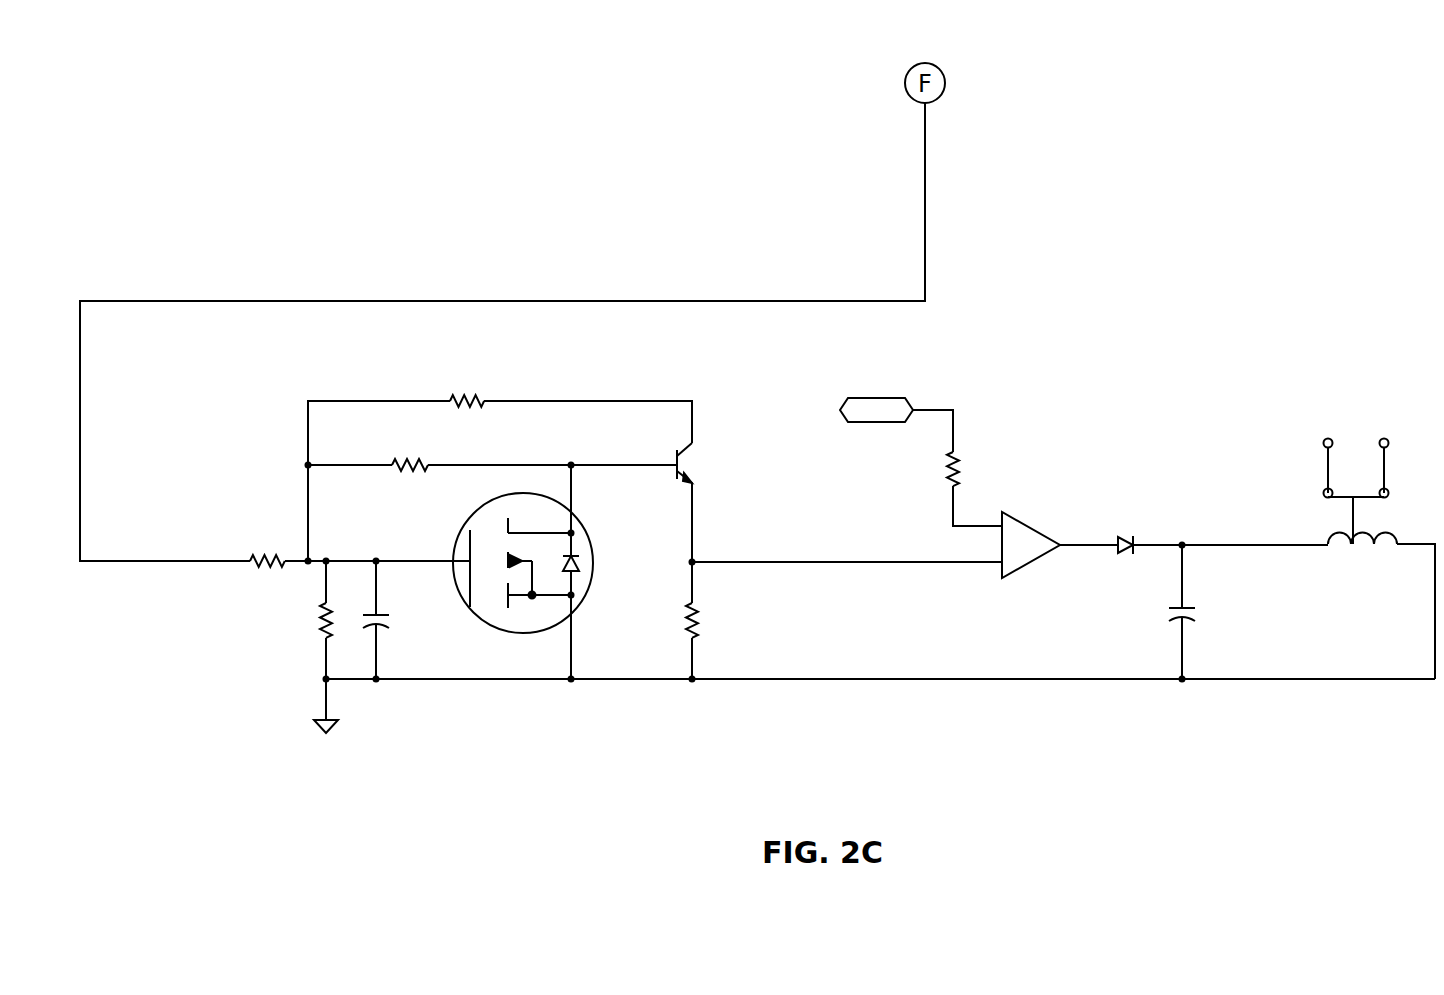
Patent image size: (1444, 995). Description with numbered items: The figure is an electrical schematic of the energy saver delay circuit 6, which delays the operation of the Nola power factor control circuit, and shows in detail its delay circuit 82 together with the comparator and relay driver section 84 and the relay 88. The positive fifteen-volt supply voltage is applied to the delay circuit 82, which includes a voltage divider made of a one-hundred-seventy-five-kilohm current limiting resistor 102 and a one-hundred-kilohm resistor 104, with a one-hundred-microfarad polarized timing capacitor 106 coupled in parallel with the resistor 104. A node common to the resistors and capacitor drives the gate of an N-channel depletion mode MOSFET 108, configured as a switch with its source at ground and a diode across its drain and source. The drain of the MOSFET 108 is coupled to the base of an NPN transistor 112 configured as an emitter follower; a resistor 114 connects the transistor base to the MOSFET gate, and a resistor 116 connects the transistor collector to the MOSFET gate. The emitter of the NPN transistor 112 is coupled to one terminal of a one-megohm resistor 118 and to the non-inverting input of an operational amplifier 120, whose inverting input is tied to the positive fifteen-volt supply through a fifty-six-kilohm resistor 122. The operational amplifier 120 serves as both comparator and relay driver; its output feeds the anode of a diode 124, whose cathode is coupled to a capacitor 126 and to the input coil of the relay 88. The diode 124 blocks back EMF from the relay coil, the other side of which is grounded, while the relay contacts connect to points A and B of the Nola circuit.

The energy saver delay circuit 6 is at (993, 690).
The delay circuit 82 is at (586, 713).
The comparator 84 is at (940, 645).
The relay 88 is at (1440, 492).
The current limiting resistor 102 is at (262, 572).
The resistor 104 is at (318, 632).
The timing capacitor 106 is at (379, 650).
The MOSFET 108 is at (585, 592).
The NPN transistor 112 is at (700, 480).
The resistor 114 is at (420, 458).
The resistor 116 is at (480, 394).
The resistor 118 is at (700, 636).
The operational amplifier 120 is at (1037, 582).
The resistor 122 is at (953, 450).
The diode 124 is at (1125, 557).
The capacitor 126 is at (1178, 618).